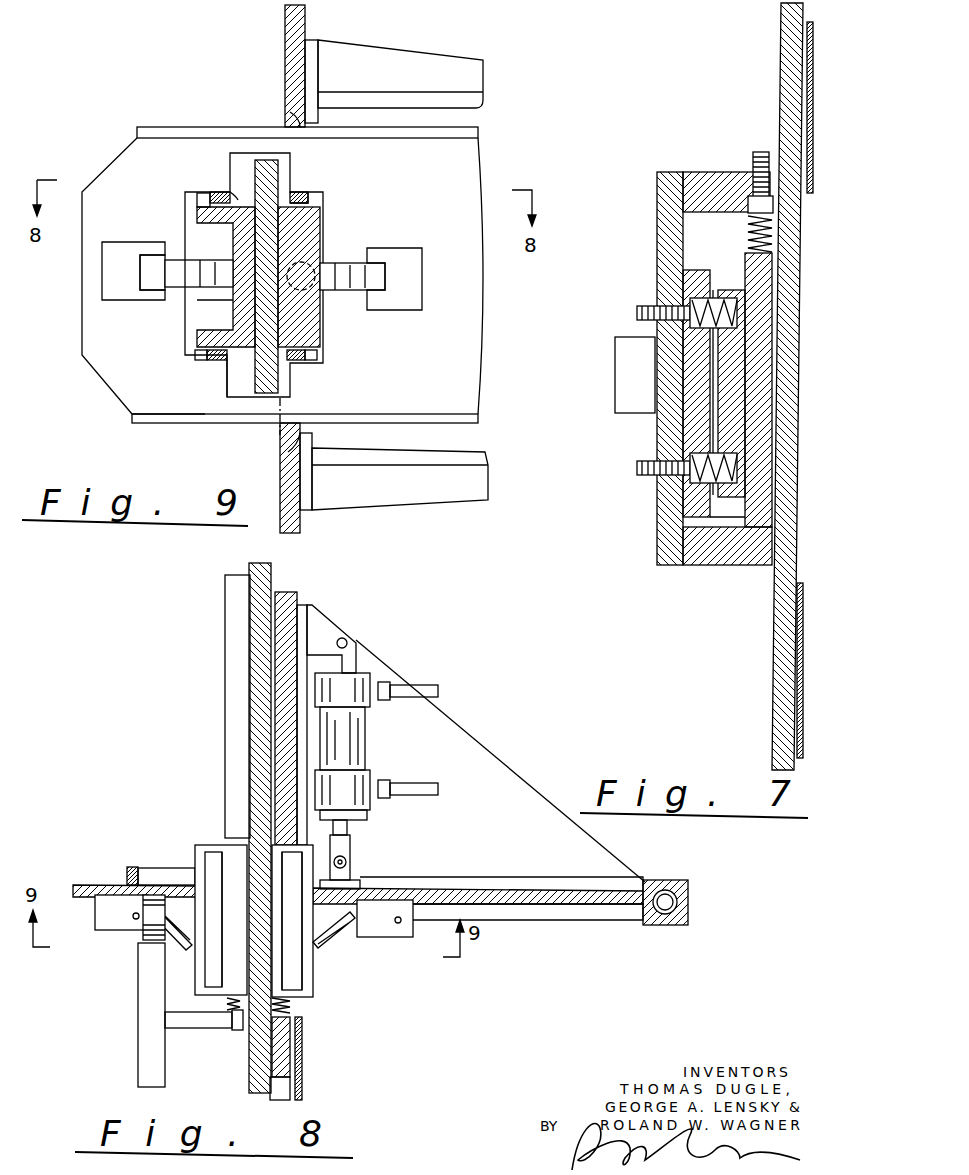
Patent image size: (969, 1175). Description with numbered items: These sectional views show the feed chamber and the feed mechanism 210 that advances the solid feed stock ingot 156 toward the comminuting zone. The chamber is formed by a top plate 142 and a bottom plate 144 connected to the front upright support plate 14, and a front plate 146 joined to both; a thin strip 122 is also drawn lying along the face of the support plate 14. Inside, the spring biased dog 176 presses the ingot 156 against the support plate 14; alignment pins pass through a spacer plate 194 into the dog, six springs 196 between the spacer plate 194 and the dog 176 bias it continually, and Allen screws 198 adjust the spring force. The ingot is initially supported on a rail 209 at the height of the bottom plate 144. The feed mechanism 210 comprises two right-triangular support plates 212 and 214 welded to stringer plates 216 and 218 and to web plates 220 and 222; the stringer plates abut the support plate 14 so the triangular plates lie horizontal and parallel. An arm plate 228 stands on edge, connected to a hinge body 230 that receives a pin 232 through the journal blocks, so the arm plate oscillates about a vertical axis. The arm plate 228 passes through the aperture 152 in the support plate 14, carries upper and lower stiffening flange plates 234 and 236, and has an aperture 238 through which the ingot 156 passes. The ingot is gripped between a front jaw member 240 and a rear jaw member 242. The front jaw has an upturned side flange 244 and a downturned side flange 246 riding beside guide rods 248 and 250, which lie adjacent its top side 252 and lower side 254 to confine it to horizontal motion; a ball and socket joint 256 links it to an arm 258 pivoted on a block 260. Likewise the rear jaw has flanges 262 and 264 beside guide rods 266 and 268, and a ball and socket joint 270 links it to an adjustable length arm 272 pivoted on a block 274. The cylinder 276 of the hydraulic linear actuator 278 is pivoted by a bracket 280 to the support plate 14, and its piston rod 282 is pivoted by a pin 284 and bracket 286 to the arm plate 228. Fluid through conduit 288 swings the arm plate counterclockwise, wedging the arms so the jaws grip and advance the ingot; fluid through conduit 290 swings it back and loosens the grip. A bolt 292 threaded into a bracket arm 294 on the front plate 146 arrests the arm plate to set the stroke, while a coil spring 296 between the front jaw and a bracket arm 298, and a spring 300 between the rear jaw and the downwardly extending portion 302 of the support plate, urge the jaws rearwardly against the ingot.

In FIG. 9, the front upright support plate 14 is at (290, 45).
In FIG. 7, the front upright support plate 14 is at (780, 662).
In FIG. 8, the front upright support plate 14 is at (288, 602).
In FIG. 7, the wear strip 122 is at (808, 92).
In FIG. 8, the wear strip 122 is at (302, 1034).
In FIG. 7, the top plate 142 is at (732, 170).
In FIG. 7, the bottom plate 144 is at (728, 562).
In FIG. 7, the front plate 146 is at (666, 253).
In FIG. 9, the aperture 152 is at (290, 114).
In FIG. 8, the aperture 152 is at (275, 818).
In FIG. 9, the feed stock ingot 156 is at (280, 376).
In FIG. 7, the feed stock ingot 156 is at (748, 266).
In FIG. 8, the feed stock ingot 156 is at (252, 628).
In FIG. 7, the spring biased dog 176 is at (723, 423).
In FIG. 7, the spacer plate 194 is at (693, 427).
In FIG. 7, the springs 196 is at (680, 298).
In FIG. 7, the Allen screws 198 is at (637, 313).
In FIG. 9, the rail 209 is at (205, 424).
In FIG. 8, the rail 209 is at (233, 650).
In FIG. 9, the feed mechanism 210 is at (166, 104).
In FIG. 8, the feed mechanism 210 is at (157, 826).
In FIG. 9, the right-triangularly shaped support plate 212 is at (478, 456).
In FIG. 8, the right-triangularly shaped support plate 212 is at (474, 738).
In FIG. 9, the right-triangularly shaped support plate 214 is at (465, 109).
In FIG. 9, the stringer plate 216 is at (303, 510).
In FIG. 9, the stringer plate 218 is at (312, 52).
In FIG. 9, the web plate 220 is at (427, 498).
In FIG. 9, the web plate 222 is at (402, 58).
In FIG. 9, the arm plate 228 is at (482, 312).
In FIG. 8, the arm plate 228 is at (106, 886).
In FIG. 8, the hinge body 230 is at (673, 925).
In FIG. 8, the pin 232 is at (688, 899).
In FIG. 9, the upper stiffening flange plate 234 is at (425, 139).
In FIG. 9, the lower stiffening flange plate 236 is at (425, 422).
In FIG. 9, the aperture 238 is at (230, 157).
In FIG. 9, the front jaw member 240 is at (240, 318).
In FIG. 8, the front jaw member 240 is at (210, 857).
In FIG. 9, the rear jaw member 242 is at (312, 326).
In FIG. 8, the rear jaw member 242 is at (273, 976).
In FIG. 9, the upturned side flange 244 is at (200, 200).
In FIG. 9, the downturned side flange 246 is at (195, 355).
In FIG. 9, the guide rod 248 is at (210, 196).
In FIG. 8, the guide rod 248 is at (215, 972).
In FIG. 9, the guide rod 250 is at (207, 360).
In FIG. 9, the top side 252 is at (238, 196).
In FIG. 9, the lower side 254 is at (227, 375).
In FIG. 9, the ball and socket joint 256 is at (197, 305).
In FIG. 9, the arm 258 is at (170, 258).
In FIG. 8, the arm 258 is at (167, 945).
In FIG. 9, the block 260 is at (123, 295).
In FIG. 8, the block 260 is at (103, 915).
In FIG. 9, the upturned flange 262 is at (323, 197).
In FIG. 8, the upturned flange 262 is at (302, 995).
In FIG. 9, the downturned flange 264 is at (305, 356).
In FIG. 9, the guide rod 266 is at (300, 192).
In FIG. 8, the guide rod 266 is at (287, 962).
In FIG. 9, the guide rod 268 is at (300, 366).
In FIG. 9, the ball and socket joint 270 is at (312, 266).
In FIG. 9, the adjustable length arm 272 is at (360, 263).
In FIG. 8, the adjustable length arm 272 is at (347, 936).
In FIG. 9, the block 274 is at (405, 257).
In FIG. 8, the block 274 is at (397, 928).
In FIG. 8, the cylinder 276 is at (357, 683).
In FIG. 8, the hydraulic linear actuator 278 is at (375, 741).
In FIG. 8, the bracket 280 is at (327, 632).
In FIG. 8, the piston rod 282 is at (350, 828).
In FIG. 8, the pin 284 is at (352, 858).
In FIG. 8, the bracket 286 is at (360, 879).
In FIG. 8, the conduit 288 is at (408, 687).
In FIG. 8, the conduit 290 is at (405, 787).
In FIG. 8, the bolt 292 is at (142, 934).
In FIG. 7, the bracket arm 294 is at (627, 388).
In FIG. 8, the bracket arm 294 is at (147, 1048).
In FIG. 8, the coil spring 296 is at (232, 1030).
In FIG. 8, the bracket arm 298 is at (175, 1018).
In FIG. 8, the spring 300 is at (290, 1007).
In FIG. 8, the downwardly extending portion 302 is at (283, 1067).